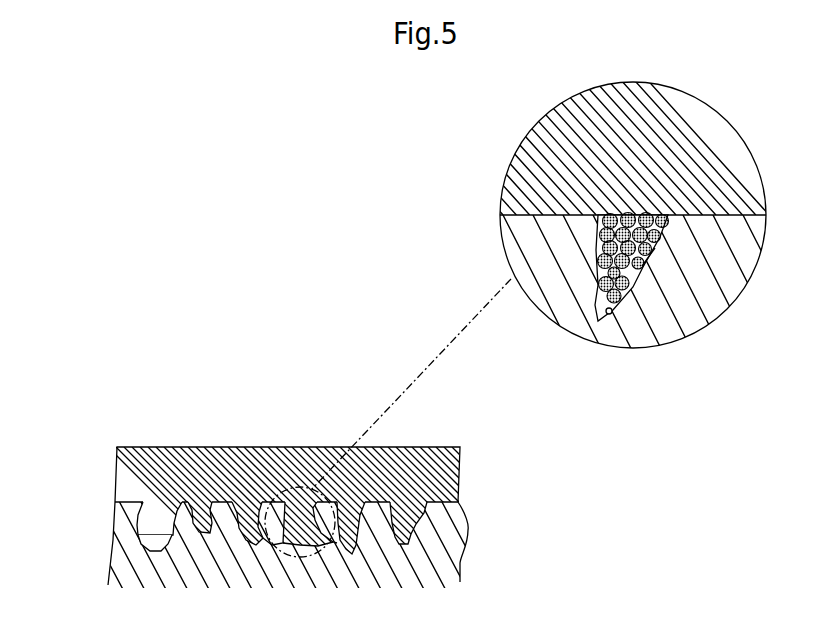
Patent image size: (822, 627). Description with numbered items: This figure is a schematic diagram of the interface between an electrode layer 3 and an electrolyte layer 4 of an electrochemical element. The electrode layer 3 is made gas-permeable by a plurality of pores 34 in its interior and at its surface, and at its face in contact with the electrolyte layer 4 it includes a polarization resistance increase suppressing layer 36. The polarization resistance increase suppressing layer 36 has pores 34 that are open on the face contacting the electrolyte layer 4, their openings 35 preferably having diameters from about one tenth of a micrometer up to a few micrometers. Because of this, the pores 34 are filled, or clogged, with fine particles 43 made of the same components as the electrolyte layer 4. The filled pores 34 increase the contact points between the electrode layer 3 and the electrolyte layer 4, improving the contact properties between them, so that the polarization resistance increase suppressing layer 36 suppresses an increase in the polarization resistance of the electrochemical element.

The electrode layer 3 is at (520, 267).
The electrolyte layer 4 is at (538, 147).
The pores 34 is at (620, 310).
The openings 35 is at (598, 232).
The polarization resistance increase suppressing layer 36 is at (488, 500).
The fine particles 43 is at (633, 289).